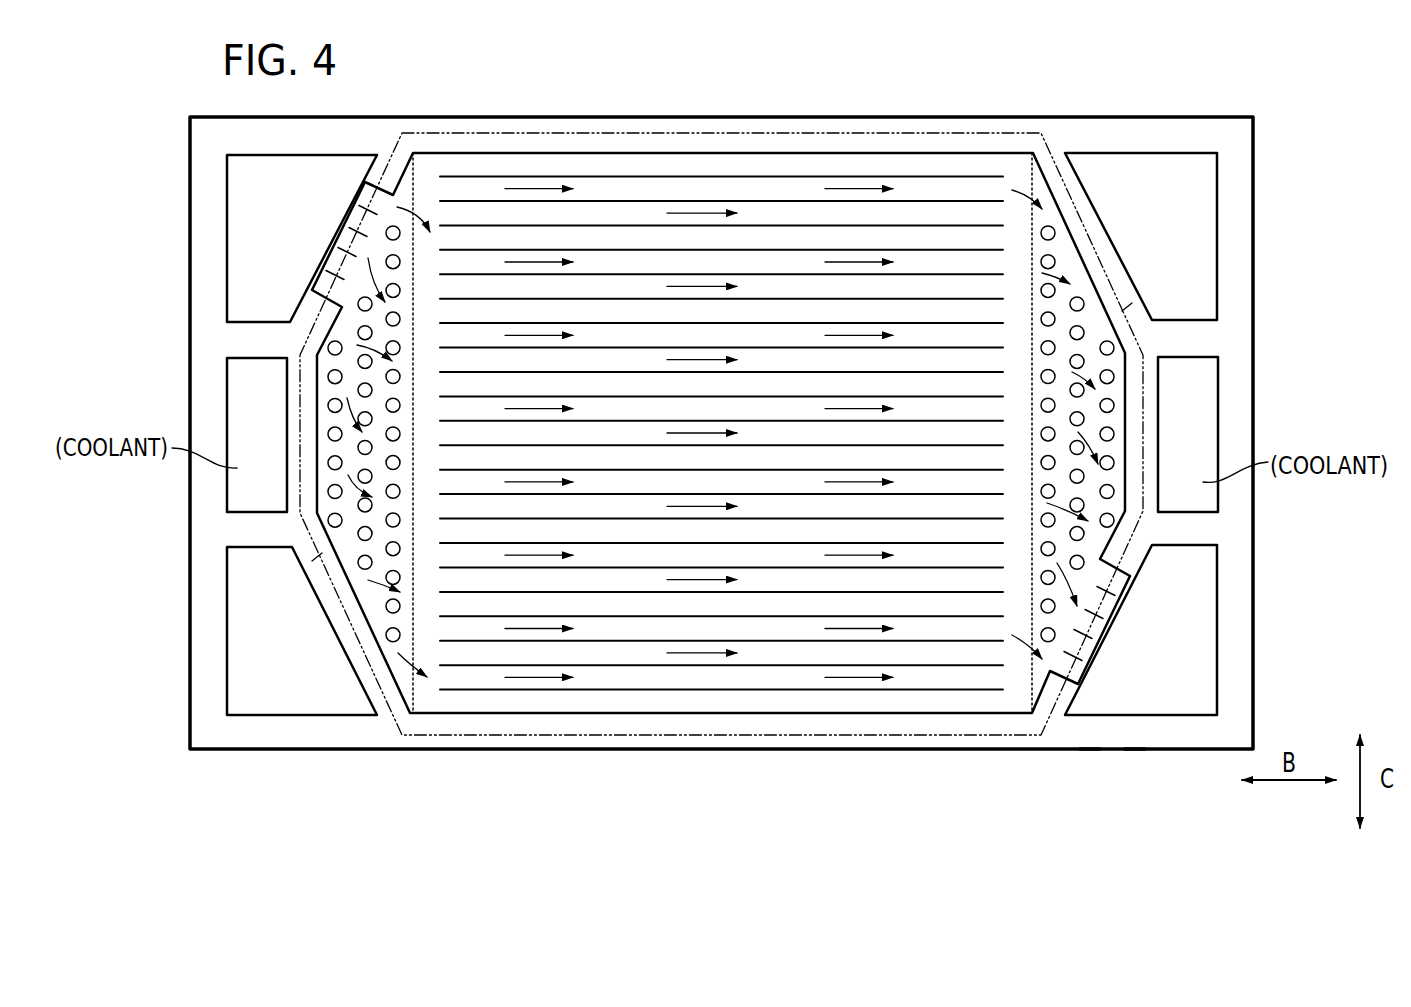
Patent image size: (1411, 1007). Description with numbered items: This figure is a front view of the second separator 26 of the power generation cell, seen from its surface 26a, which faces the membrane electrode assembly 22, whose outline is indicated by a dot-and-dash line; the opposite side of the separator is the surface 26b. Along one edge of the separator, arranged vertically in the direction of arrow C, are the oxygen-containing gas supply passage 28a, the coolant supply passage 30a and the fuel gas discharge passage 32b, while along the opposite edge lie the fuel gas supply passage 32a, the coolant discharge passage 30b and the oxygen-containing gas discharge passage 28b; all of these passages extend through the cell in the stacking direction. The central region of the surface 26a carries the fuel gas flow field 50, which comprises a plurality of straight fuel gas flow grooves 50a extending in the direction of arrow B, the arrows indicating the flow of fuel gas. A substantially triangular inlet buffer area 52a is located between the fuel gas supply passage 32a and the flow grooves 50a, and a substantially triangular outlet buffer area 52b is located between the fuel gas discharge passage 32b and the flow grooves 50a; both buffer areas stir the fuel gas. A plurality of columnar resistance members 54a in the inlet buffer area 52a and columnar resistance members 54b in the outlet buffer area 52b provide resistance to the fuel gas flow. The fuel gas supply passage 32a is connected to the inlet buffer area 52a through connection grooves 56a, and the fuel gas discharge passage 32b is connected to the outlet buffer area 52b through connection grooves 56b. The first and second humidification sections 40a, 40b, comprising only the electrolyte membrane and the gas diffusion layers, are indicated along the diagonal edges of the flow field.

The membrane electrode assembly 22 is at (557, 128).
The second separator 26 is at (1052, 86).
The surface of the second separator 26a is at (1090, 728).
The second surface of separator 26b is at (1135, 725).
The oxygen-containing gas supply passage 28a is at (1141, 236).
The oxygen-containing gas discharge passage 28b is at (302, 631).
The coolant supply passage 30a is at (1188, 434).
The coolant discharge passage 30b is at (257, 435).
The fuel gas supply passage 32a is at (302, 238).
The fuel gas discharge passage 32b is at (1141, 630).
The first humidification section 40a is at (1126, 308).
The second humidification section 40b is at (320, 556).
The fuel gas flow field 50 is at (758, 185).
The fuel gas flow grooves 50a is at (895, 243).
The inlet buffer area 52a is at (334, 366).
The outlet buffer area 52b is at (1108, 367).
The columnar resistance members 54a is at (333, 464).
The columnar resistance members 54b is at (1108, 405).
The connection grooves 56a is at (340, 261).
The connection grooves 56b is at (1099, 599).